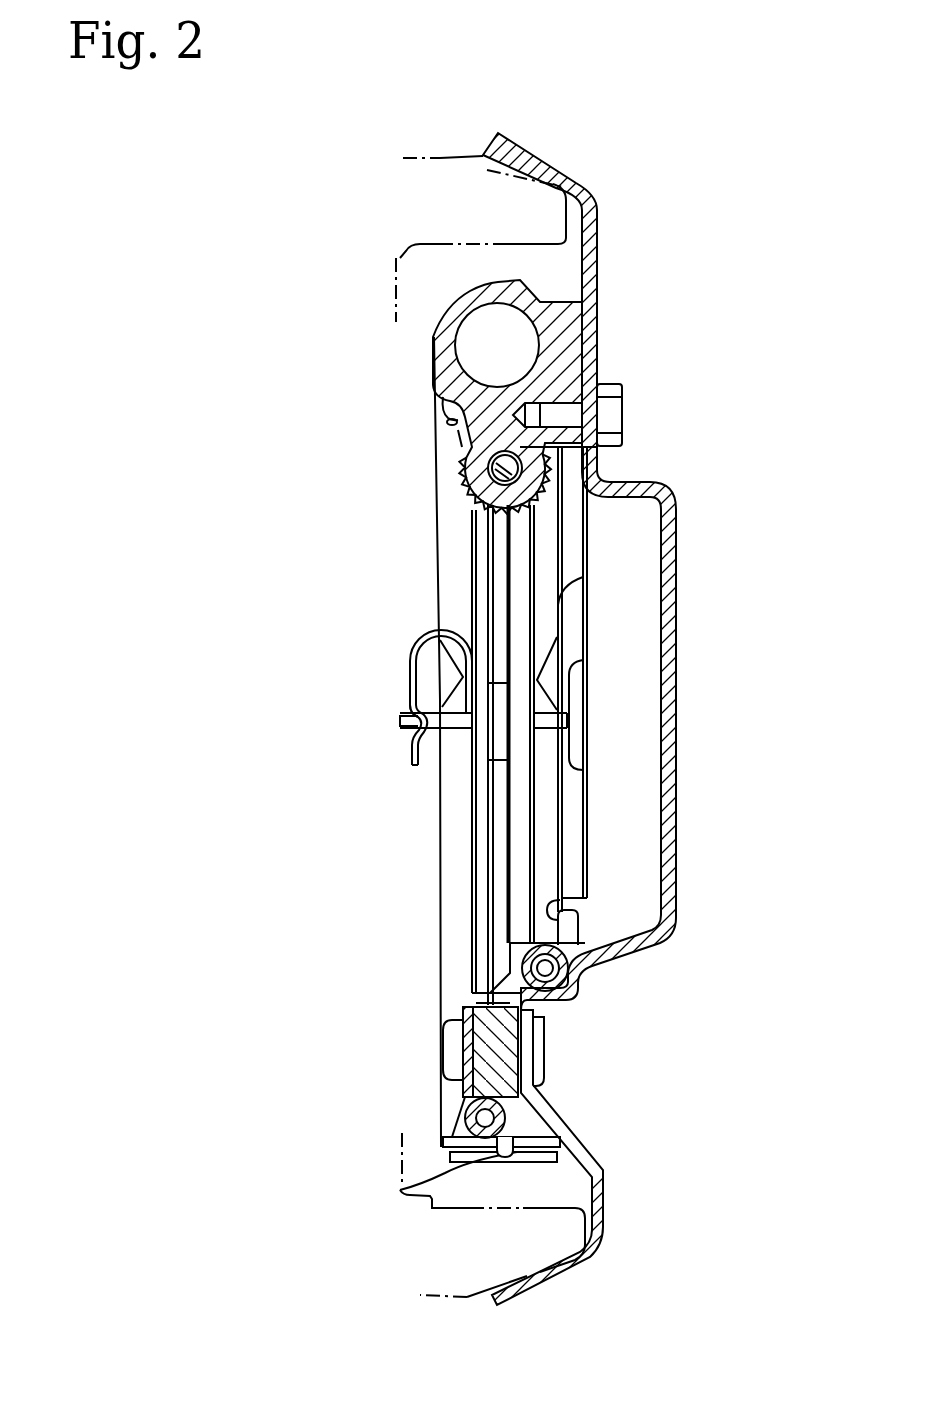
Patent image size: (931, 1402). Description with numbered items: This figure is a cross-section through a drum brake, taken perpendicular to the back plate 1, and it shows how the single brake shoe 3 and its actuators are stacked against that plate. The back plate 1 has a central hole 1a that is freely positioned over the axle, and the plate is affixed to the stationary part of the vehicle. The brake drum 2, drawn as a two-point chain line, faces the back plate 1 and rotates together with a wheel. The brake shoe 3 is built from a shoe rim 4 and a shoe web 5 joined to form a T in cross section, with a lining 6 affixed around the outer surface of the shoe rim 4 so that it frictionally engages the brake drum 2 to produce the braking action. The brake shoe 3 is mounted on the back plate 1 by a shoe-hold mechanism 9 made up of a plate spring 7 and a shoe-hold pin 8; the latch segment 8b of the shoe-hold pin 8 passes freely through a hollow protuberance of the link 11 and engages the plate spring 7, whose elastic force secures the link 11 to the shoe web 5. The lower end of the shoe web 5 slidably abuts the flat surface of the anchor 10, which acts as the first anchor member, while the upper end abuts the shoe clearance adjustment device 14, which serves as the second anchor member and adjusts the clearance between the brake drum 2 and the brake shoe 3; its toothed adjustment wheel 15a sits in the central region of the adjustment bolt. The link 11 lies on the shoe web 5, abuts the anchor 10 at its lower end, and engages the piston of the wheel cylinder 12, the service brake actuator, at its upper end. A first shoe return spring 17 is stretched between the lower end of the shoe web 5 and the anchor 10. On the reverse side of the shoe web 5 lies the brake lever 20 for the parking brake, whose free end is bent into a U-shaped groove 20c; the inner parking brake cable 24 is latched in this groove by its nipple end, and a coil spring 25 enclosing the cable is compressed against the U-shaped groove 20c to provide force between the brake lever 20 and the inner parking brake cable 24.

The back plate 1 is at (680, 931).
The central hole 1a is at (668, 862).
The brake drum 2 is at (415, 157).
The brake shoe 3 is at (435, 926).
The shoe rim 4 is at (453, 890).
The shoe web 5 is at (497, 857).
The lining 6 is at (400, 1189).
The plate spring 7 is at (410, 662).
The shoe-hold pin 8 is at (455, 733).
The latch segment 8b is at (400, 721).
The shoe-hold mechanism 9 is at (405, 738).
The anchor 10 is at (510, 1066).
The link 11 is at (480, 602).
The wheel cylinder 12 is at (437, 330).
The shoe clearance adjustment device 14 is at (455, 467).
The toothed adjustment wheel 15a is at (480, 488).
The first shoe return spring 17 is at (445, 1113).
The brake lever 20 is at (527, 625).
The U-shaped groove 20c is at (560, 900).
The inner parking brake cable 24 is at (578, 979).
The coil spring 25 is at (500, 988).